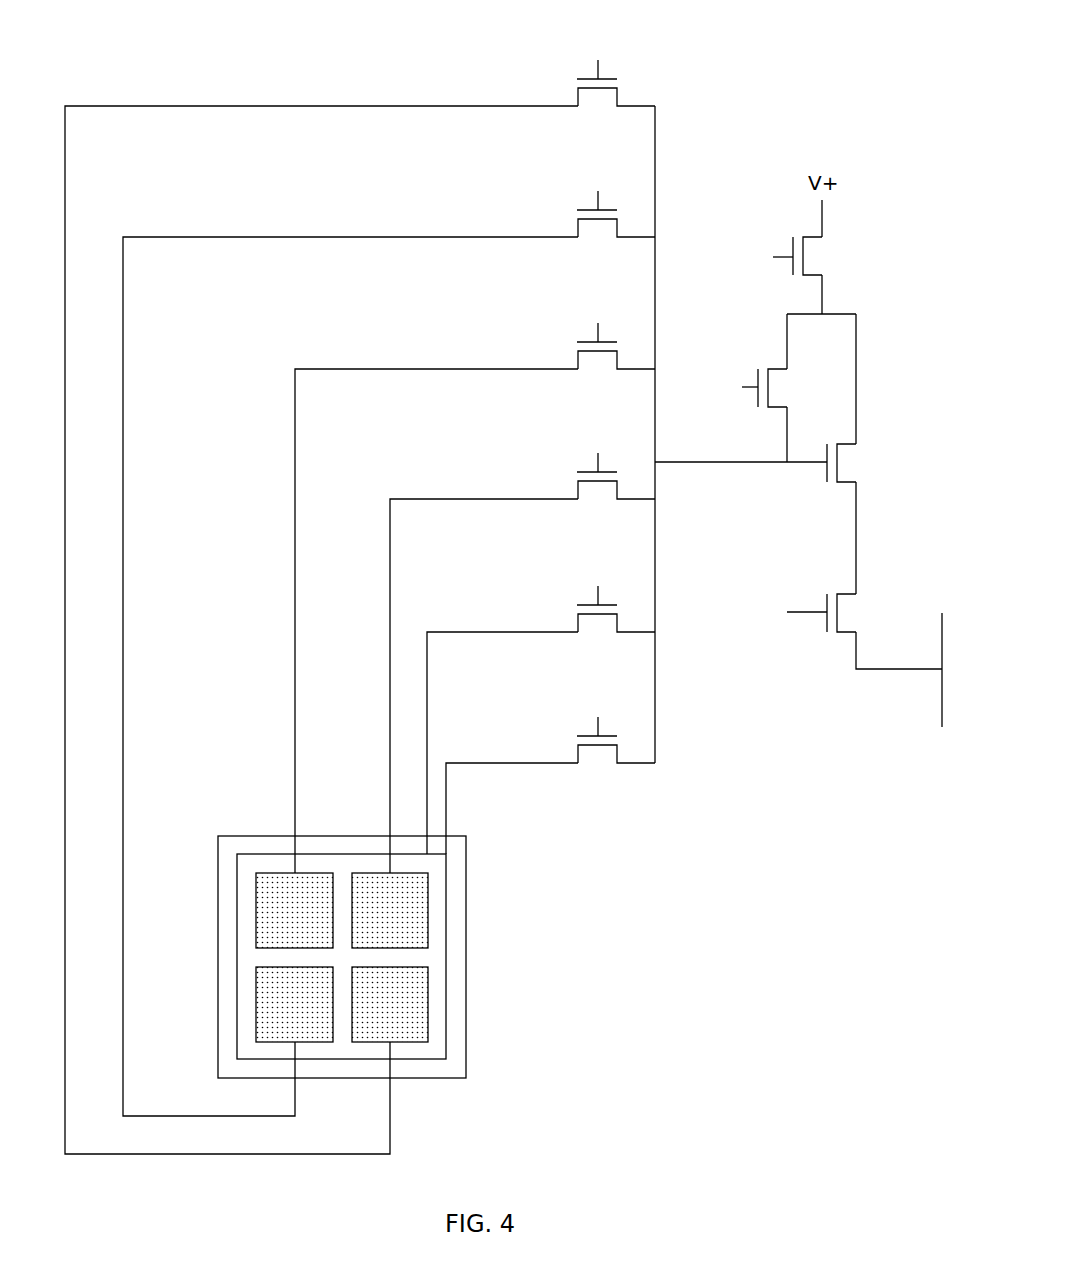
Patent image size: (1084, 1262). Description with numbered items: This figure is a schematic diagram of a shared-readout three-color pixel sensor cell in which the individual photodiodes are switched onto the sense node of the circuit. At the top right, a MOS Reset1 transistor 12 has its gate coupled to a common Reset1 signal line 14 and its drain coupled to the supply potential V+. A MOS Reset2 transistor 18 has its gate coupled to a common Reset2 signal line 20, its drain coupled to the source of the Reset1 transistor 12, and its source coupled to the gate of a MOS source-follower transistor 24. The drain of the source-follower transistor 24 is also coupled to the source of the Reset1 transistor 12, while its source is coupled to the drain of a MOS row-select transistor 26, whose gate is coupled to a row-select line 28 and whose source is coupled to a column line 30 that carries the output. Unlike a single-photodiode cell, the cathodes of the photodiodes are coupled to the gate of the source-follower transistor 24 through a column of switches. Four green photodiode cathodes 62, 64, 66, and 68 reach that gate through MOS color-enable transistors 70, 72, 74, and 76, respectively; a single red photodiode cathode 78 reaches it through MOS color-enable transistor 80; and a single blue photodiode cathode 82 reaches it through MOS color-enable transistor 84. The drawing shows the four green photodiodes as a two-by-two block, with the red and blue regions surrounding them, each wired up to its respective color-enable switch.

The MOS Reset1 transistor 12 is at (822, 257).
The Reset1 signal line 14 is at (782, 248).
The MOS Reset2 transistor 18 is at (781, 388).
The Reset2 signal line 20 is at (749, 377).
The MOS source-follower transistor 24 is at (813, 482).
The MOS row-select transistor 26 is at (845, 649).
The row-select line 28 is at (807, 623).
The column line 30 is at (937, 692).
The green photodiode cathode 62 is at (253, 885).
The green photodiode cathode 64 is at (430, 883).
The green photodiode cathode 66 is at (253, 983).
The green photodiode cathode 68 is at (411, 1047).
The MOS color-enable transistor 70 is at (623, 349).
The MOS color-enable transistor 72 is at (623, 479).
The MOS color-enable transistor 74 is at (623, 217).
The MOS color-enable transistor 76 is at (623, 86).
The red photodiode cathode 78 is at (450, 945).
The MOS color-enable transistor 80 is at (623, 612).
The blue photodiode cathode 82 is at (469, 1029).
The MOS color-enable transistor 84 is at (623, 743).